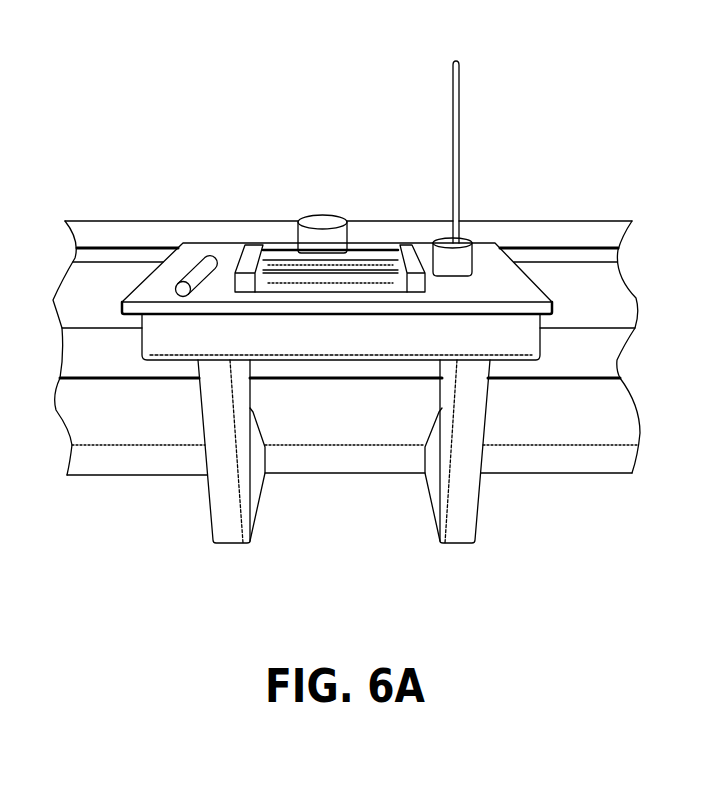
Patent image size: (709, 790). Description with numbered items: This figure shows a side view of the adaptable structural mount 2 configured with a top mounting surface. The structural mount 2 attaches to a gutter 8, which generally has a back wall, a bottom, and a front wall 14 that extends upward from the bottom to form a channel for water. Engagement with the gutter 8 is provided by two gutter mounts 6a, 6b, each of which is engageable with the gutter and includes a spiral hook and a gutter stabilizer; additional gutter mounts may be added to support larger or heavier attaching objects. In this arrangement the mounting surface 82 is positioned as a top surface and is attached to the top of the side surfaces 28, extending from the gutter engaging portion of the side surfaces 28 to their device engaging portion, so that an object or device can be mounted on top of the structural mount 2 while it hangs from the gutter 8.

The structural mount 2 is at (372, 332).
The gutter 8 is at (612, 278).
The front wall 14 is at (610, 408).
The mounting surface 82 is at (500, 283).
The gutter mount 6a is at (228, 537).
The gutter mount 6b is at (462, 540).
The side surfaces 28 is at (430, 478).